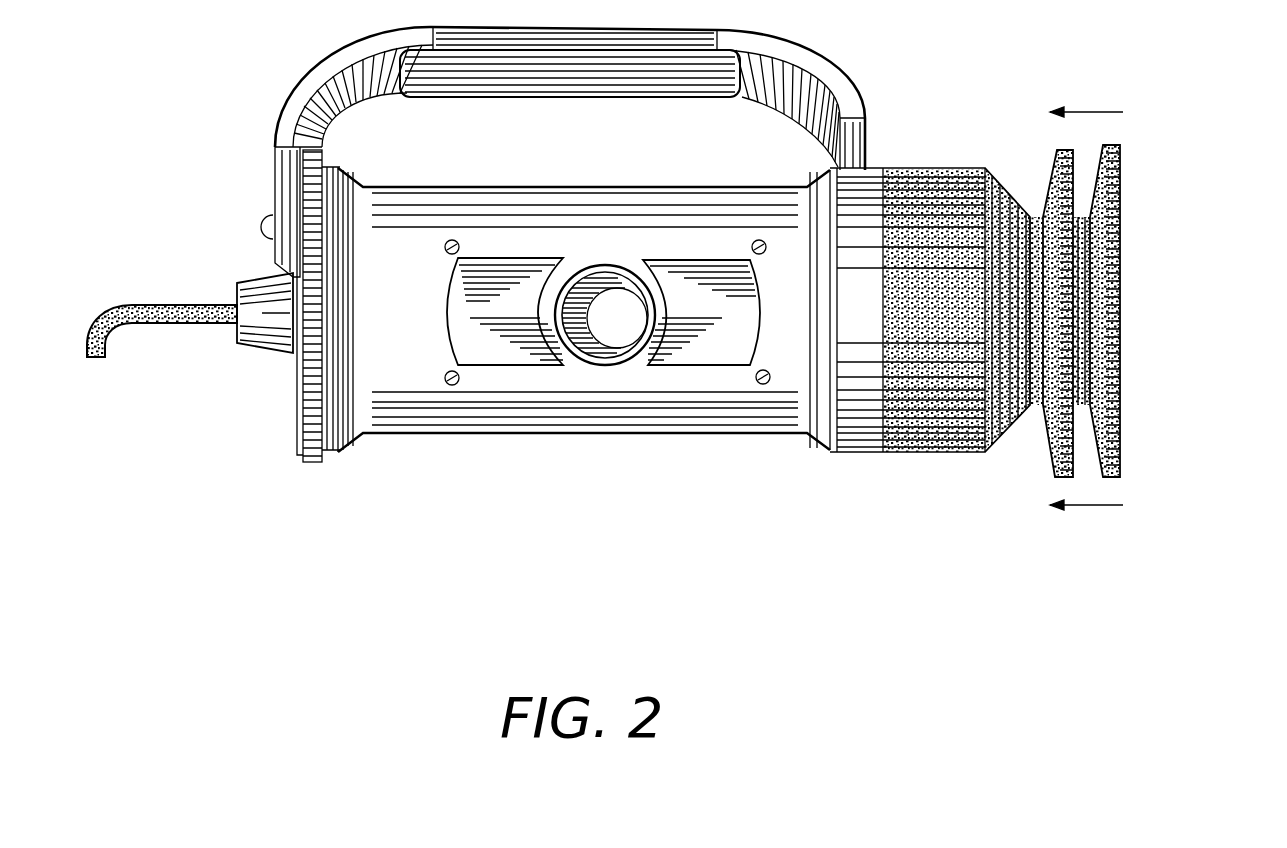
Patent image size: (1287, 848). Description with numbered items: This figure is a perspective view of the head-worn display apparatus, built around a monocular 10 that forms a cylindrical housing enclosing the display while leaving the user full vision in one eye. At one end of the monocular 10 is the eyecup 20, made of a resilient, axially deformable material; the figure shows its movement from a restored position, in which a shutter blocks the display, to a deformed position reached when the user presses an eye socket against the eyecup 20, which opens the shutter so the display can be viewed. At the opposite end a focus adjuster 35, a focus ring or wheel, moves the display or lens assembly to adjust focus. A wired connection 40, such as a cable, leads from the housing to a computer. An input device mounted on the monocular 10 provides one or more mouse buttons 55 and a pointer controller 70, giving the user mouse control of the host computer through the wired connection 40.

The monocular 10 is at (843, 445).
The eyecup 20 is at (1113, 447).
The focus adjuster 35 is at (300, 453).
The wired connection 40 is at (167, 313).
The mouse buttons 55 is at (693, 357).
The pointer controller 70 is at (577, 360).